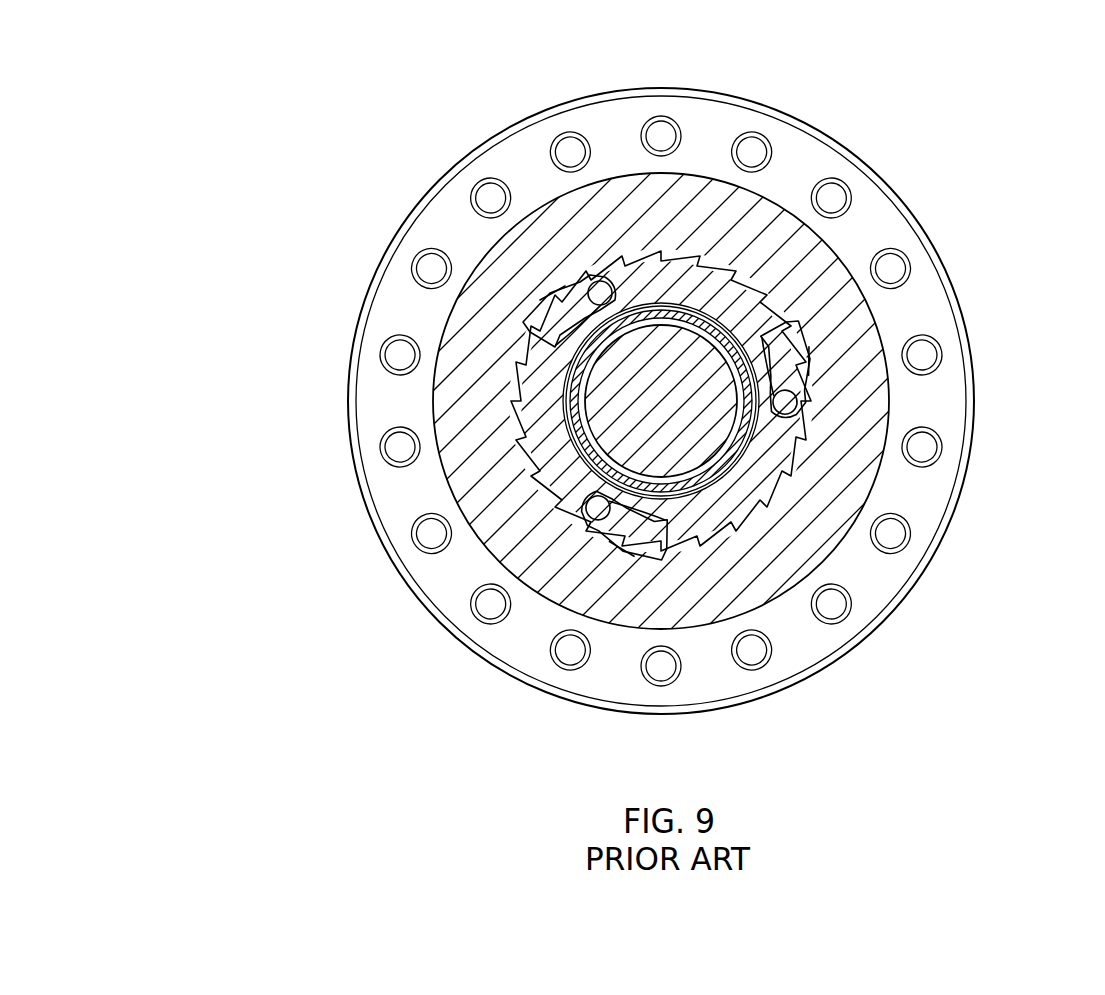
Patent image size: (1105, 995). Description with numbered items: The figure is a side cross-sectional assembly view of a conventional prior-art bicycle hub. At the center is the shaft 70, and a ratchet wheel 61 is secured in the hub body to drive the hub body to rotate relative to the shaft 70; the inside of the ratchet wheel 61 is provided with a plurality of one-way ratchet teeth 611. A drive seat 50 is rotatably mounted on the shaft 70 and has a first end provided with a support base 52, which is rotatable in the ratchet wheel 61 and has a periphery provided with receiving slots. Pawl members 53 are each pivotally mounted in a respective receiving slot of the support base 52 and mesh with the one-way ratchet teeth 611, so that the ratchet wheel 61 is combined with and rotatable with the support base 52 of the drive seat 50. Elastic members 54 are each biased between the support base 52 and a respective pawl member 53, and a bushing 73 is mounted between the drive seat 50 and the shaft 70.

The drive seat 50 is at (800, 160).
The support base 52 is at (733, 497).
The pawl member 53 is at (805, 343).
The elastic member 54 is at (783, 316).
The ratchet wheel 61 is at (833, 510).
The one-way ratchet teeth 611 is at (870, 432).
The shaft 70 is at (617, 443).
The bushing 73 is at (580, 420).